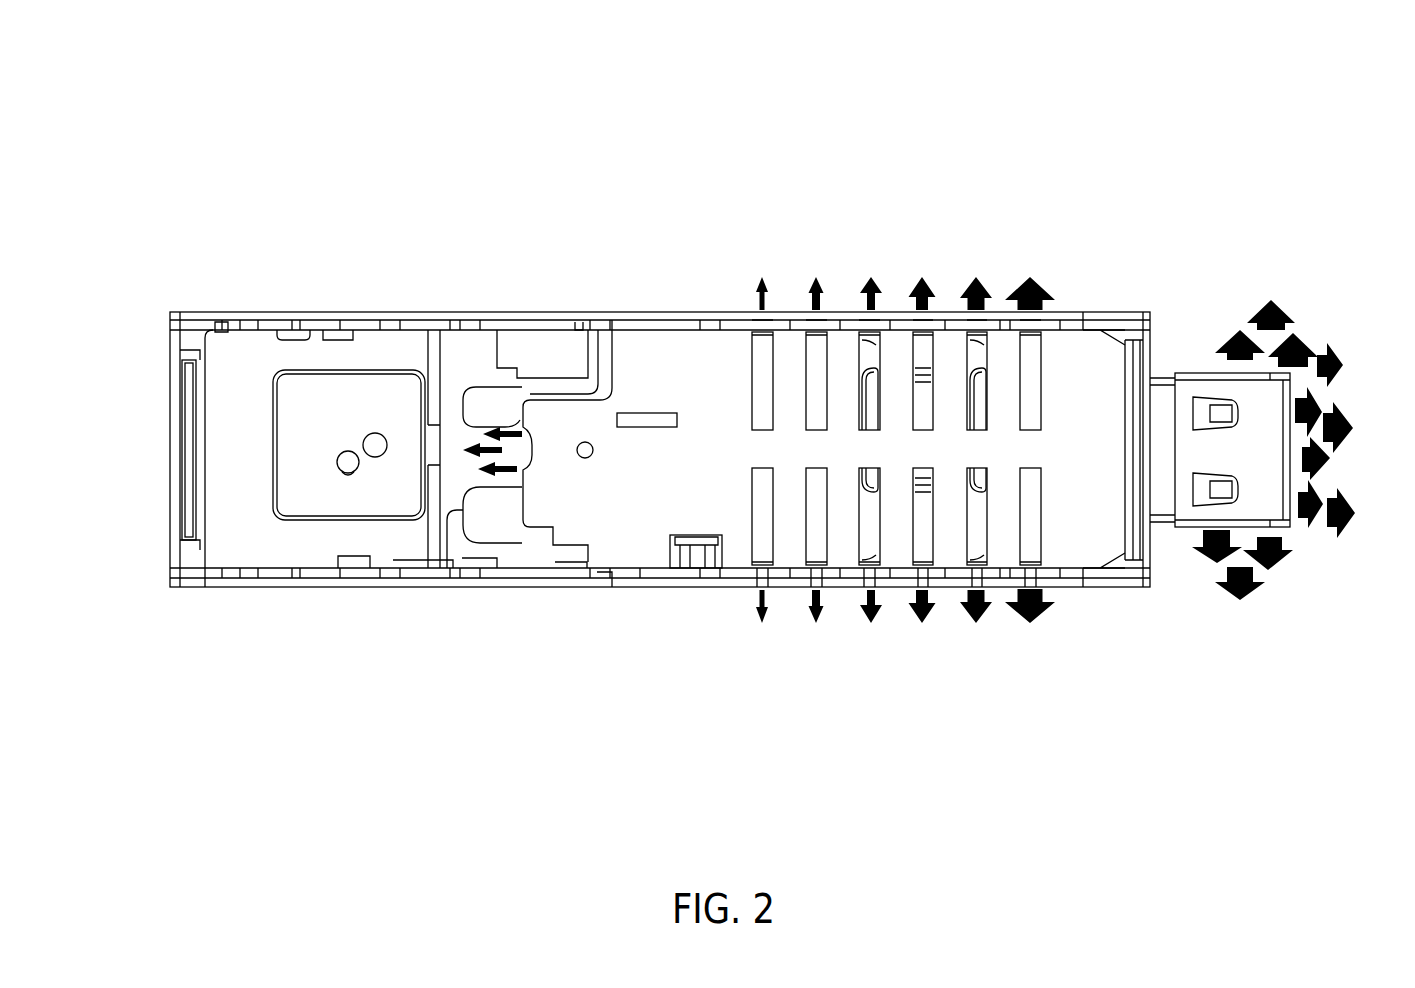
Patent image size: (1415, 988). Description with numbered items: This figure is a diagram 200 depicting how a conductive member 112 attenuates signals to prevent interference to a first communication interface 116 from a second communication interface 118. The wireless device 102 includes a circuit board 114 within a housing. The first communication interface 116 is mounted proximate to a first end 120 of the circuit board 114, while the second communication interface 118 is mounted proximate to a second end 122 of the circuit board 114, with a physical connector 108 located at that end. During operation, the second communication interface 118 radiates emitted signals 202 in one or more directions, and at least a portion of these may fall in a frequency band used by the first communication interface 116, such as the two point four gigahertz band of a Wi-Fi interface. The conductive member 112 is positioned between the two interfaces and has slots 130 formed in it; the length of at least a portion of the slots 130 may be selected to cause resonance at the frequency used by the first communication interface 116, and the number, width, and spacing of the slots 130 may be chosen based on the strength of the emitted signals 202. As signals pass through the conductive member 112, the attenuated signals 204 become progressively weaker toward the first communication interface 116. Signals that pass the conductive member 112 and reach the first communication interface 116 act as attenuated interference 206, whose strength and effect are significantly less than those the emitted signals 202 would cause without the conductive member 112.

The diagram 200 is at (1305, 64).
The wireless device 102 is at (1085, 157).
The physical connector 108 is at (1205, 385).
The conductive member 112 is at (675, 337).
The circuit board 114 is at (467, 345).
The first communication interface 116 is at (323, 490).
The second communication interface 118 is at (970, 478).
The first end 120 is at (220, 312).
The second end 122 is at (1072, 587).
The slots 130 is at (760, 365).
The emitted signals 202 is at (1207, 560).
The attenuated signals 204 is at (903, 235).
The attenuated interference 206 is at (500, 475).